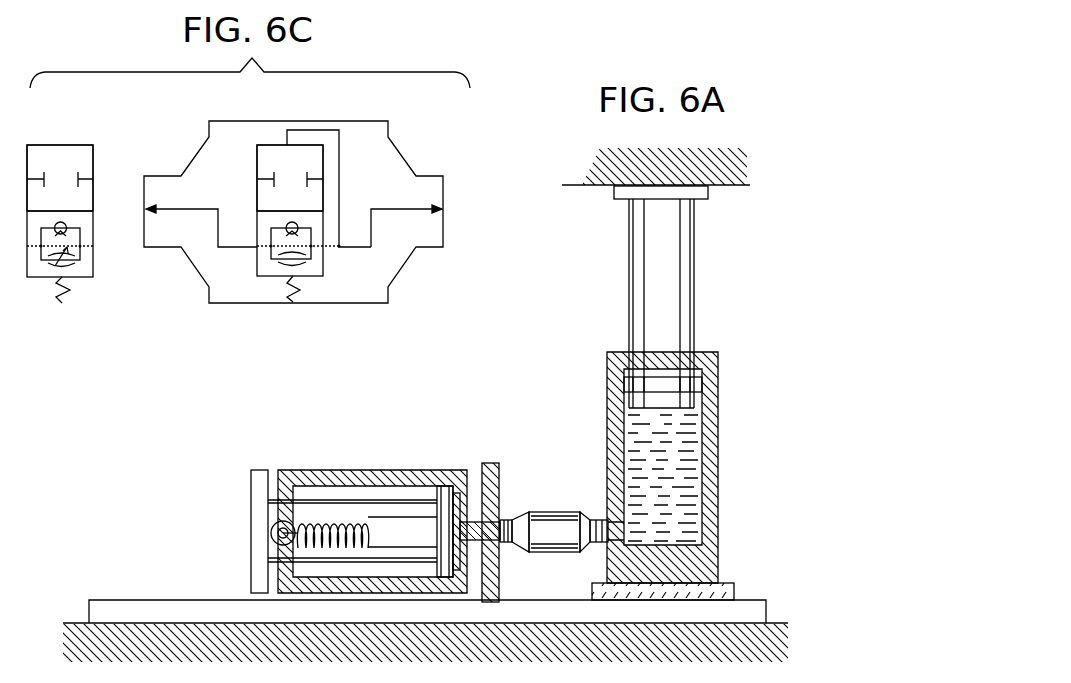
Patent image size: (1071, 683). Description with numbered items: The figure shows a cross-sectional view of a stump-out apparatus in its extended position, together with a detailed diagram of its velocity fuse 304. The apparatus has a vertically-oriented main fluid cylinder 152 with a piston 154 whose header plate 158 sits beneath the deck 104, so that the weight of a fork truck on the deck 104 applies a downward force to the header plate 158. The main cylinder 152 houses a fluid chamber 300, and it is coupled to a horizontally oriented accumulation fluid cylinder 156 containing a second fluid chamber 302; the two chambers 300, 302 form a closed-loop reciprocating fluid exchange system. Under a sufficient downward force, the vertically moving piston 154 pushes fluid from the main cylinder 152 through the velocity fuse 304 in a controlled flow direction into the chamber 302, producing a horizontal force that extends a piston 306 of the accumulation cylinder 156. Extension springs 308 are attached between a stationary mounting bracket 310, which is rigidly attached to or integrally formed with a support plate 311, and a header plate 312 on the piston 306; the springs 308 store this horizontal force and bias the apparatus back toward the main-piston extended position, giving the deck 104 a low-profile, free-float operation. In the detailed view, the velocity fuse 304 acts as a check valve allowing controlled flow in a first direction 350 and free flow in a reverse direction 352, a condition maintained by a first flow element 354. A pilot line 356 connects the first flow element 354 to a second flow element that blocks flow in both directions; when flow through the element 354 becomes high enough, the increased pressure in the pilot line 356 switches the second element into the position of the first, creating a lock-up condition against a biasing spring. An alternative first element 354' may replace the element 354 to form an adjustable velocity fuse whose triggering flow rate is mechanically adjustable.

In FIG. 6A, the deck 104 is at (596, 188).
In FIG. 6A, the main fluid cylinder 152 is at (718, 432).
In FIG. 6A, the piston 154 is at (697, 262).
In FIG. 6A, the accumulation fluid cylinder 156 is at (347, 470).
In FIG. 6A, the header plate 158 is at (712, 193).
In FIG. 6A, the fluid chamber 300 is at (690, 468).
In FIG. 6A, the fluid chamber 302 is at (463, 493).
In FIG. 6C, the velocity fuse 304 is at (403, 155).
In FIG. 6A, the velocity fuse 304 is at (558, 513).
In FIG. 6A, the piston 306 is at (402, 500).
In FIG. 6A, the extension springs 308 is at (320, 517).
In FIG. 6A, the stationary mounting bracket 310 is at (500, 580).
In FIG. 6A, the support plate 311 is at (89, 612).
In FIG. 6A, the header plate 312 is at (250, 510).
In FIG. 6C, the first direction 350 is at (195, 210).
In FIG. 6C, the reverse direction 352 is at (392, 213).
In FIG. 6C, the first flow element 354 is at (316, 249).
In FIG. 6C, the first element 354' is at (88, 226).
In FIG. 6C, the pilot line 356 is at (342, 142).